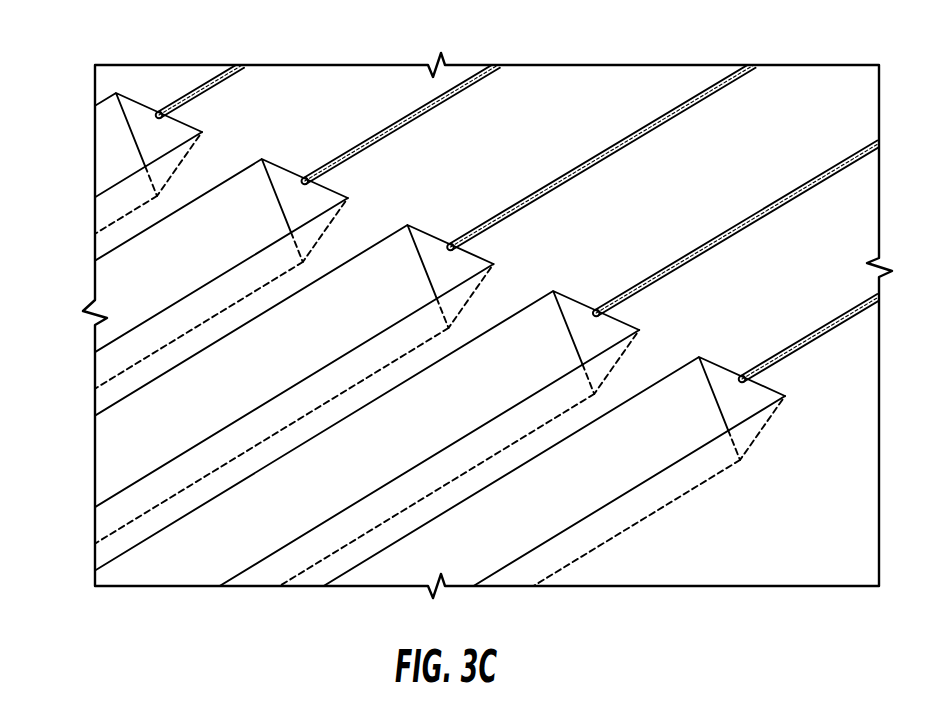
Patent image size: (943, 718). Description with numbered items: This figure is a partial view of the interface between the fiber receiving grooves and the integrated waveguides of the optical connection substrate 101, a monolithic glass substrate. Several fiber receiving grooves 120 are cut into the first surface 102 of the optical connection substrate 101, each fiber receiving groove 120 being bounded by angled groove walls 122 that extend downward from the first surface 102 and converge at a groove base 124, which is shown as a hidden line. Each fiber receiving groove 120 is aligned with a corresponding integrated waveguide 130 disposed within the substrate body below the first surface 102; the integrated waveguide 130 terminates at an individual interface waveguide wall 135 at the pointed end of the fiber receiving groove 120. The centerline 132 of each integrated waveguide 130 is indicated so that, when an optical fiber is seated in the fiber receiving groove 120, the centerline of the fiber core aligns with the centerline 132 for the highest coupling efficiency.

The optical connection substrate 101 is at (582, 104).
The first surface 102 is at (533, 158).
The fiber receiving groove 120 is at (162, 532).
The groove wall 122 is at (255, 384).
The groove base 124 is at (240, 457).
The integrated waveguide 130 is at (401, 97).
The centerline 132 is at (372, 128).
The interface waveguide wall 135 is at (135, 124).